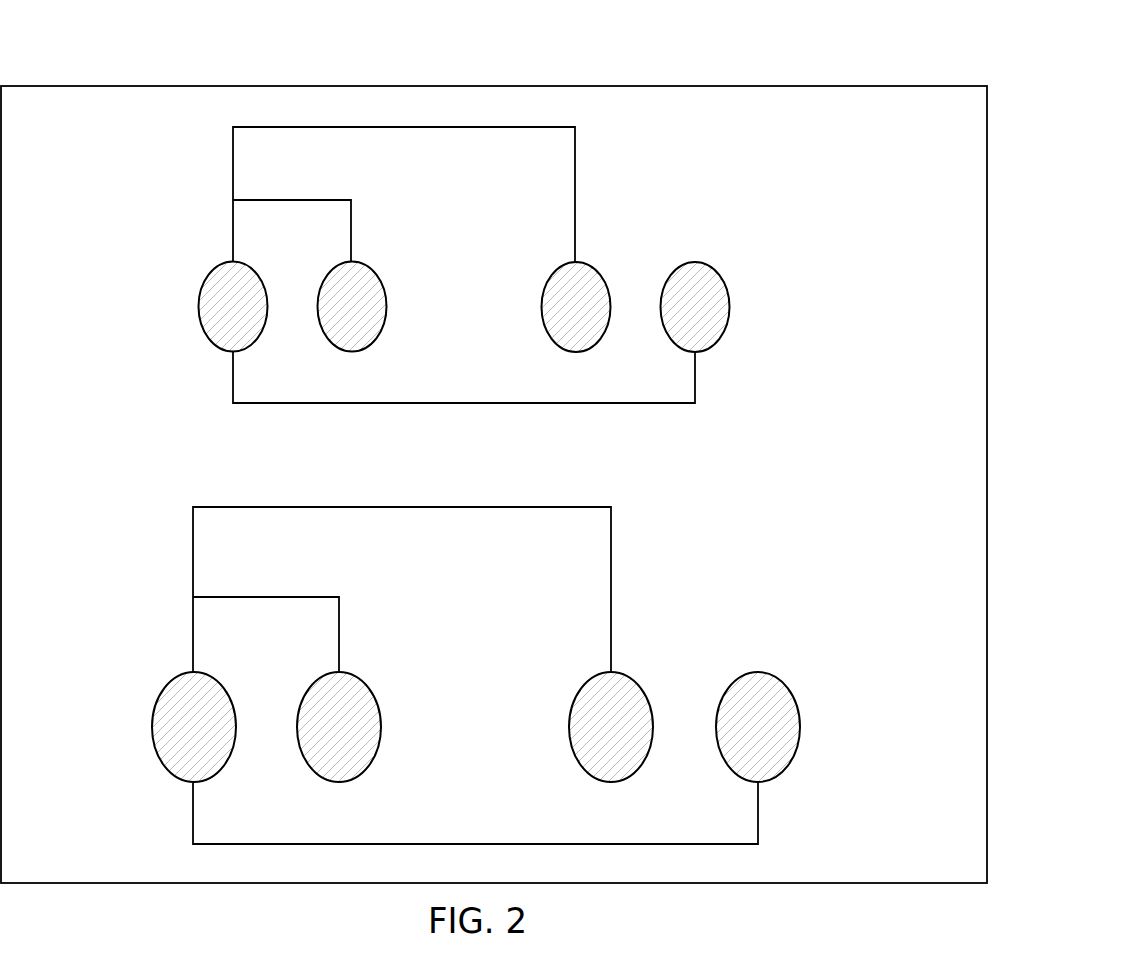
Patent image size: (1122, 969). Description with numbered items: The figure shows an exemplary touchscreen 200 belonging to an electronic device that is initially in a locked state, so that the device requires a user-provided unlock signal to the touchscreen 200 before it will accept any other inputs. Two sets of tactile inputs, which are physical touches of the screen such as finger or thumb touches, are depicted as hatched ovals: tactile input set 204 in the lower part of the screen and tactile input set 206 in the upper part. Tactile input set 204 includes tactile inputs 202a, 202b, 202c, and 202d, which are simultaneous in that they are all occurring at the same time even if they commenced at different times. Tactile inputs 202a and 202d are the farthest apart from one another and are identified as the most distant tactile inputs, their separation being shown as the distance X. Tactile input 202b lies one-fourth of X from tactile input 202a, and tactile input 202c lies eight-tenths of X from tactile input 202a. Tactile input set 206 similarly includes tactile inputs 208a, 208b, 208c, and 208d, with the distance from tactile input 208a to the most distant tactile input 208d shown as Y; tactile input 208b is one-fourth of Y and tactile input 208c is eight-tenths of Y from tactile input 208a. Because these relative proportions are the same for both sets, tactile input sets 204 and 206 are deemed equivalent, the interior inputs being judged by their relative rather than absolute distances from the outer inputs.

The touchscreen 200 is at (1005, 163).
The tactile input set 204 is at (505, 667).
The tactile input set 206 is at (503, 285).
The tactile input 202a is at (152, 728).
The tactile input 202b is at (380, 714).
The tactile input 202c is at (571, 713).
The tactile input 202d is at (800, 731).
The tactile input 208a is at (198, 308).
The tactile input 208b is at (386, 296).
The tactile input 208c is at (549, 272).
The tactile input 208d is at (729, 301).